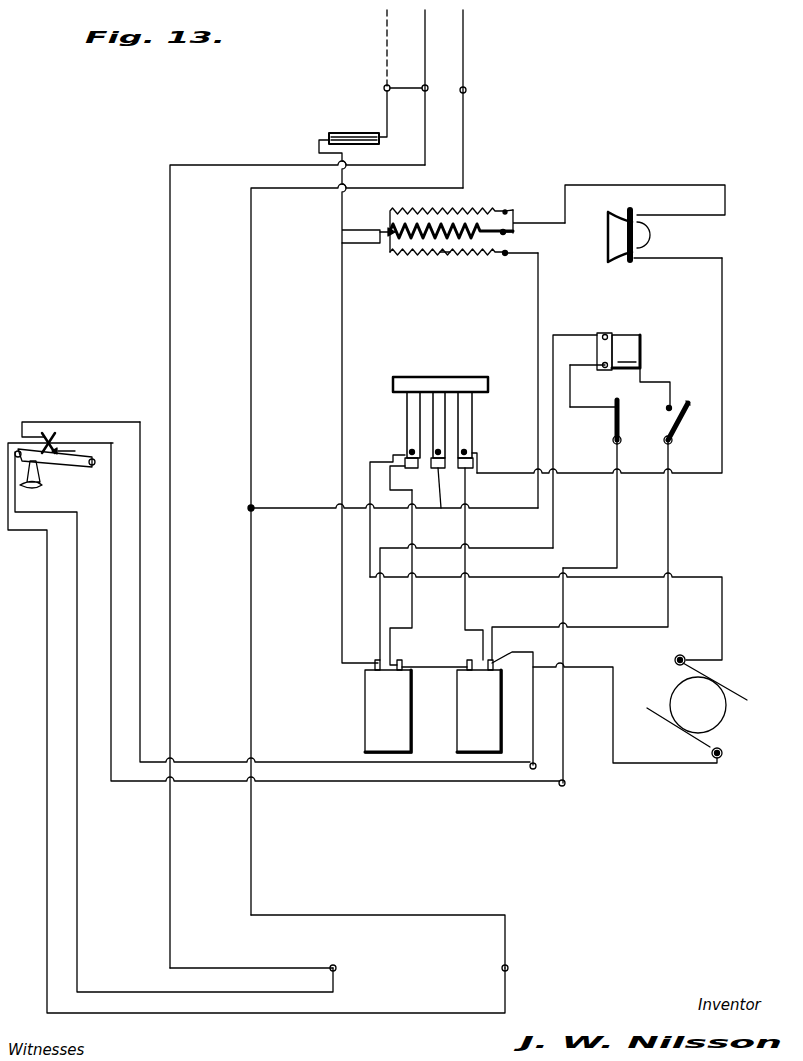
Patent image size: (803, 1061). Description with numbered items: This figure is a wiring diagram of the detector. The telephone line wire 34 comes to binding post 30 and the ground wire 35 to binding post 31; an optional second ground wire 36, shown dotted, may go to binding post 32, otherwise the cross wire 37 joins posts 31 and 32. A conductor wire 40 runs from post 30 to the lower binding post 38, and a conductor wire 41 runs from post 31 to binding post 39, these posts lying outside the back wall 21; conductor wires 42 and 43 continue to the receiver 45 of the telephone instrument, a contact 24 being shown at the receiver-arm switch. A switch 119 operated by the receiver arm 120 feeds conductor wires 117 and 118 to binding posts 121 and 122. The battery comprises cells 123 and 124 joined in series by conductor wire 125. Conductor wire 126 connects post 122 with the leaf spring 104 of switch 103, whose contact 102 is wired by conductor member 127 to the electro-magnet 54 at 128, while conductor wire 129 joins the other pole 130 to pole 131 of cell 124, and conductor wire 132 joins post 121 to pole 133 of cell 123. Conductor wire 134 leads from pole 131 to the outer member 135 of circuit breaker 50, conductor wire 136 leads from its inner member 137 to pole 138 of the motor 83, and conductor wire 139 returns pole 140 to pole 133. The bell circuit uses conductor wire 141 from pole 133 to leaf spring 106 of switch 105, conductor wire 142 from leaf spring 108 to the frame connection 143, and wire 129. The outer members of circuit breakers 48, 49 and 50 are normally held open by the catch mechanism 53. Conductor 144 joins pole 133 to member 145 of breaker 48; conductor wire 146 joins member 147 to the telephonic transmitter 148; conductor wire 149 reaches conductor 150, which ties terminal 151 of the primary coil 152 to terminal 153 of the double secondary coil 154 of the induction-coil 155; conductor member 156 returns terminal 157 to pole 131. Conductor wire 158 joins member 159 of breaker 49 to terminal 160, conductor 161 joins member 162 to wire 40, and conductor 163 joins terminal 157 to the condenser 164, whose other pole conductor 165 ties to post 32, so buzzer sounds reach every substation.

The second ground wire 36 is at (385, 13).
The ground wire 35 is at (426, 32).
The line wire 34 is at (464, 50).
The binding post 32 is at (384, 87).
The binding post 31 is at (427, 86).
The binding post 30 is at (466, 89).
The cross wire 37 is at (410, 91).
The conductor 163 is at (386, 118).
The condenser 164 is at (333, 135).
The conductor 165 is at (341, 213).
The conductor wire 41 is at (172, 478).
The conductor wire 40 is at (253, 375).
The conductor member 156 is at (343, 322).
The terminal 157 is at (390, 229).
The double secondary coil 154 is at (458, 208).
The terminal 153 is at (519, 209).
The induction-coil 155 is at (468, 252).
The conductor 150 is at (515, 217).
The terminal 151 is at (515, 233).
The primary coil 152 is at (466, 257).
The terminal 160 is at (505, 257).
The conductor wire 158 is at (537, 362).
The conductor wire 149 is at (645, 185).
The telephonic transmitter 148 is at (652, 235).
The pole 130 is at (604, 335).
The electro-magnet 54 is at (626, 335).
The electrical connection 143 is at (645, 358).
The conductor wire 129 is at (555, 458).
The pole connection 128 is at (607, 368).
The conductor member 127 is at (582, 399).
The conductor wire 142 is at (660, 382).
The contact 102 is at (666, 407).
The second switch 105 is at (683, 420).
The leaf spring 108 is at (688, 404).
The leaf spring 106 is at (672, 440).
The switch 103 is at (613, 425).
The leaf spring 104 is at (622, 427).
The conductor wire 141 is at (672, 537).
The conductor wire 126 is at (564, 708).
The conductor wire 146 is at (726, 384).
The pivoted catch mechanism 53 is at (421, 377).
The circuit breaker 50 is at (407, 410).
The circuit breaker 49 is at (442, 390).
The circuit breaker 48 is at (473, 413).
The outer member 135 is at (410, 450).
The inner member 137 is at (407, 474).
The conductor wire 134 is at (413, 605).
The member 159 is at (441, 450).
The member 162 is at (437, 485).
The member 147 is at (467, 451).
The member 145 is at (468, 469).
The conductor 161 is at (312, 509).
The conductor 144 is at (468, 530).
The conductor wire 136 is at (506, 579).
The cell 123 is at (457, 705).
The cell 124 is at (412, 737).
The pole 131 is at (376, 661).
The conductor wire 125 is at (428, 666).
The conductor wire 132 is at (532, 704).
The pole 133 is at (495, 660).
The binding post 121 is at (532, 771).
The conductor wire 139 is at (614, 688).
The binding post 122 is at (564, 786).
The conductor wire 117 is at (332, 766).
The conductor wire 118 is at (368, 783).
The motor 83 is at (727, 720).
The pole 138 is at (683, 656).
The pole 140 is at (718, 760).
The conductor wire 42 is at (305, 1014).
The conductor wire 43 is at (165, 993).
The binding post 38 is at (508, 967).
The binding post 39 is at (336, 967).
The contact 24 is at (45, 432).
The back wall 21 is at (56, 432).
The switch 119 is at (79, 453).
The receiver arm 120 is at (72, 465).
The receiver 45 is at (25, 486).